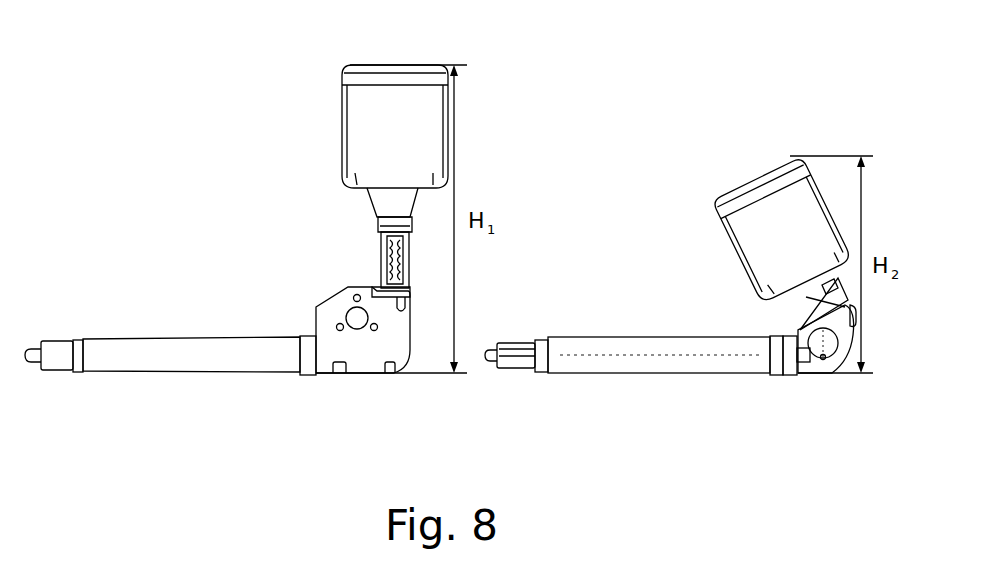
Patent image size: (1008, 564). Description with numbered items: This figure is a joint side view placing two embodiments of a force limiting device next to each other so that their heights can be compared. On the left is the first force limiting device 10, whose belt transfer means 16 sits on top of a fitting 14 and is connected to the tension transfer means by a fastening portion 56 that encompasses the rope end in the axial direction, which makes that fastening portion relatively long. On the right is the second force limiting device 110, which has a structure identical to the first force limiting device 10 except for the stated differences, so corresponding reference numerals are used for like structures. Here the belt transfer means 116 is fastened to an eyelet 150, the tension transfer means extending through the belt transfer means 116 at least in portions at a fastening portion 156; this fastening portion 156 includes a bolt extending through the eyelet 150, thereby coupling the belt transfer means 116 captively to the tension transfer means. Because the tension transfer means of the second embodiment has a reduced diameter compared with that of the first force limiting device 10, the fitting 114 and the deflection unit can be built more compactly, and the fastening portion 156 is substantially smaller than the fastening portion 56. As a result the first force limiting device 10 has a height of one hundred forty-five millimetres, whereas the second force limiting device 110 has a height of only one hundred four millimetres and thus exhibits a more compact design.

The force limiting device 10 is at (150, 238).
The fitting 14 is at (346, 394).
The belt transfer means 16 is at (386, 108).
The fastening portion 56 is at (364, 247).
The force limiting device 110 is at (616, 250).
The fitting 114 is at (823, 398).
The belt transfer means 116 is at (805, 228).
The eyelet 150 is at (784, 320).
The fastening portion 156 is at (809, 278).